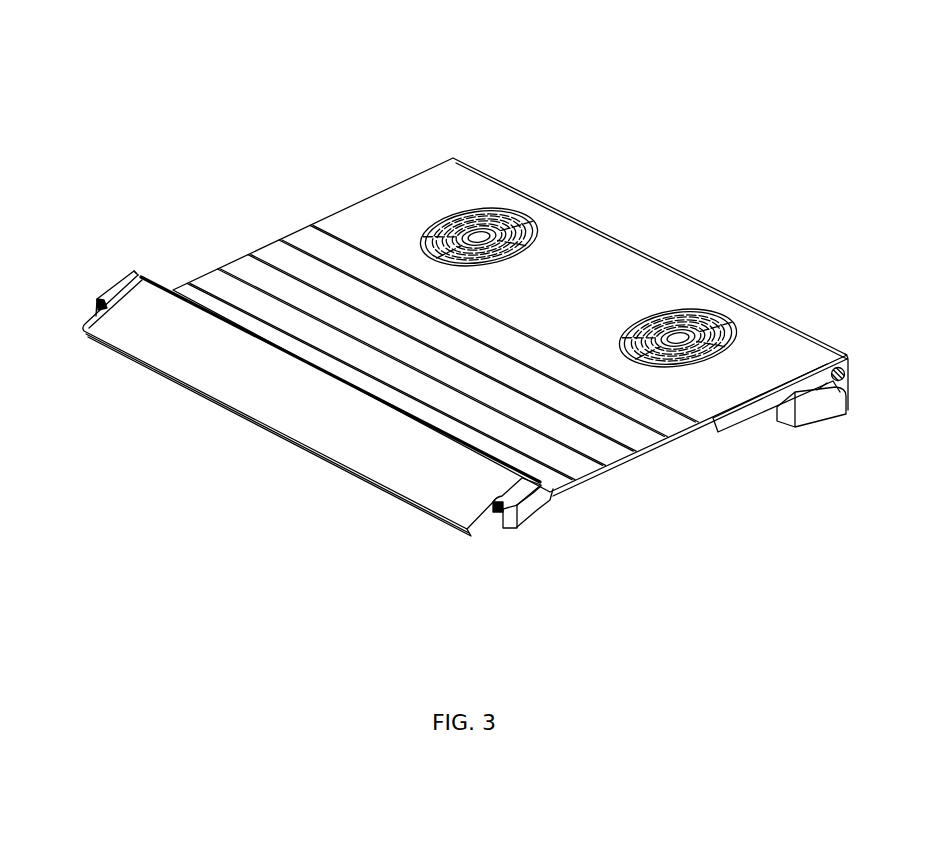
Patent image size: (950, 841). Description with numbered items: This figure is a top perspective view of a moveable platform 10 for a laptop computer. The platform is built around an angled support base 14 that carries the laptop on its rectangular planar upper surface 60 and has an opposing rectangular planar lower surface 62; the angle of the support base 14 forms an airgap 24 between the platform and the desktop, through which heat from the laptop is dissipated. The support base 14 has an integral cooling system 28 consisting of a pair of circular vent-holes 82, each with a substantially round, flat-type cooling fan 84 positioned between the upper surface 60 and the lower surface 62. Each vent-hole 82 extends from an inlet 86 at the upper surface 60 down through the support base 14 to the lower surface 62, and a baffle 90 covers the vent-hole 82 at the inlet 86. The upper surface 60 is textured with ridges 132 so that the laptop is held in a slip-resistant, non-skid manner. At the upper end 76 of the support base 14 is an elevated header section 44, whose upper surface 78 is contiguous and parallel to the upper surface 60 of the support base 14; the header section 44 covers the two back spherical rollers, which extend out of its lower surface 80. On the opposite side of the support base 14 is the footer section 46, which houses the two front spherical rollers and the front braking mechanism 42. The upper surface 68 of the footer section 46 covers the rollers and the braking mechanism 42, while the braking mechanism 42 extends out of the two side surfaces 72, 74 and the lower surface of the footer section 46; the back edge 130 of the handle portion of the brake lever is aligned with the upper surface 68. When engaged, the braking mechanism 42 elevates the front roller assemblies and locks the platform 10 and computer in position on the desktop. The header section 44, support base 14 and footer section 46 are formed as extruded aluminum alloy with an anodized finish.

The moveable platform 10 is at (167, 128).
The angled support base 14 is at (302, 232).
The airgap 24 is at (590, 485).
The cooling system 28 is at (463, 212).
The front braking mechanism 42 is at (528, 502).
The header section 44 is at (432, 135).
The footer section 46 is at (108, 265).
The upper surface 60 is at (384, 186).
The lower surface 62 is at (607, 470).
The upper surface 68 is at (478, 500).
The side surface 72 is at (478, 532).
The side surface 74 is at (125, 277).
The upper end 76 is at (704, 440).
The upper surface 78 is at (817, 357).
The lower surface 80 is at (800, 437).
The vent-hole 82 is at (523, 218).
The cooling fan 84 is at (478, 215).
The inlet 86 is at (527, 242).
The baffle 90 is at (493, 215).
The back edge 130 is at (108, 297).
The ridges 132 is at (253, 248).